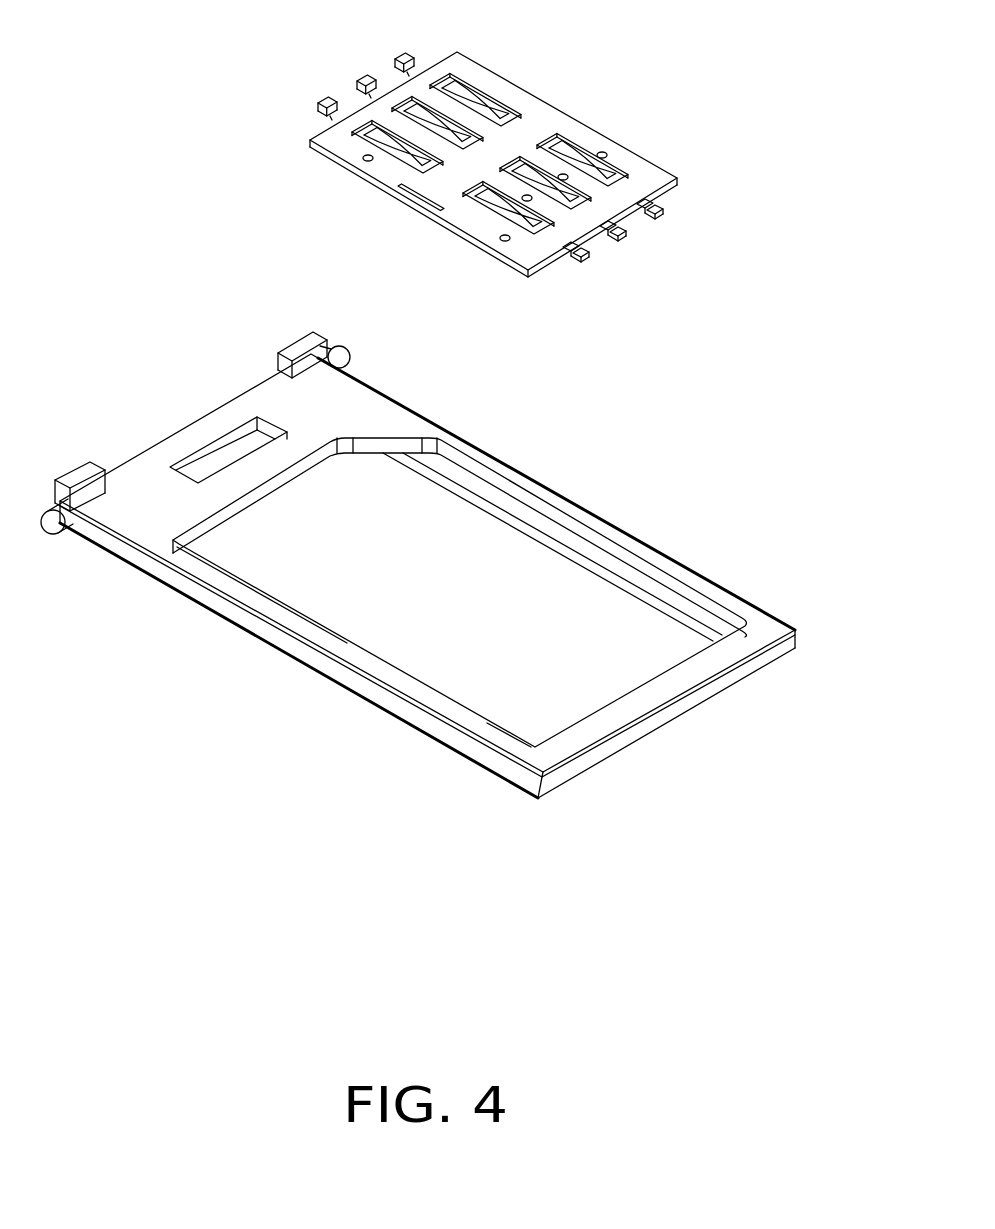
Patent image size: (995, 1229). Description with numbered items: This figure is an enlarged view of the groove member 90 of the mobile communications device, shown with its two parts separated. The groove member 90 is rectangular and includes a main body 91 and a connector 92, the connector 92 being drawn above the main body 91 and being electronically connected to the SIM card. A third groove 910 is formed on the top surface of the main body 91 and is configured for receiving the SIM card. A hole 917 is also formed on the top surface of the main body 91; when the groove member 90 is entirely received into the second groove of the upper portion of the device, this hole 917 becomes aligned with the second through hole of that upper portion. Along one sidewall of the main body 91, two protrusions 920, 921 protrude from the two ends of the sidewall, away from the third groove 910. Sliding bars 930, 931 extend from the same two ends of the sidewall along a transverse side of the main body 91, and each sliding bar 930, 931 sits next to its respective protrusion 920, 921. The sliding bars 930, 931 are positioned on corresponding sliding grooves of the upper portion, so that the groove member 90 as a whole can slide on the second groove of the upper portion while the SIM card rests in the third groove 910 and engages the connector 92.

The groove member 90 is at (178, 57).
The main body 91 is at (305, 648).
The connector 92 is at (640, 172).
The third groove 910 is at (606, 680).
The hole 917 is at (238, 448).
The protrusion 920 is at (302, 347).
The protrusion 921 is at (82, 470).
The sliding bar 930 is at (338, 353).
The sliding bar 931 is at (50, 522).